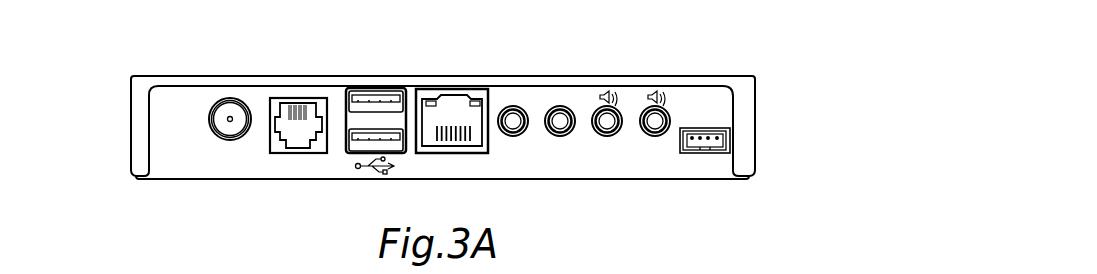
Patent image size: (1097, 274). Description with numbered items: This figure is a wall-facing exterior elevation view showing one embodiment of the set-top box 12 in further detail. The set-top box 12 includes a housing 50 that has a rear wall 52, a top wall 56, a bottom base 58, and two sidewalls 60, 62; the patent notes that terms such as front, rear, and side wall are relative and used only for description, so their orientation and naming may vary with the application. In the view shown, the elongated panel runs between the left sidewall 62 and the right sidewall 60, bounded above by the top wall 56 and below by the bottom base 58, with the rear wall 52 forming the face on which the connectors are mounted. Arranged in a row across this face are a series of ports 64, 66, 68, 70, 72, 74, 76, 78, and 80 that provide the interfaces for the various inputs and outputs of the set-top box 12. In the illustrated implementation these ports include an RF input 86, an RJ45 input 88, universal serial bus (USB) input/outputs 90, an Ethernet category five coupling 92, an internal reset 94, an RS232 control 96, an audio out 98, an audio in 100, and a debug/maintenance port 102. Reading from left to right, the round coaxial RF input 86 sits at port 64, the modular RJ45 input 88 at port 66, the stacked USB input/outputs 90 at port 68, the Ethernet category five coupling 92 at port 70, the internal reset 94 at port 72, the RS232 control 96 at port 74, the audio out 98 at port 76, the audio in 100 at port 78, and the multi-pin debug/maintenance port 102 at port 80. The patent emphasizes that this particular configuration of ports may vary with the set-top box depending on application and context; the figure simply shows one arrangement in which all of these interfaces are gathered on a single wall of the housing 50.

The set-top box 12 is at (133, 64).
The housing 50 is at (737, 70).
The rear wall 52 is at (168, 168).
The top wall 56 is at (199, 75).
The bottom base 58 is at (318, 182).
The sidewall 60 is at (753, 118).
The sidewall 62 is at (130, 93).
The port 64 is at (229, 100).
The port 66 is at (298, 100).
The port 68 is at (382, 94).
The port 70 is at (457, 94).
The port 72 is at (513, 106).
The port 74 is at (560, 106).
The port 76 is at (607, 106).
The port 78 is at (655, 106).
The port 80 is at (703, 153).
The RF input 86 is at (229, 140).
The RJ45 input 88 is at (278, 153).
The universal serial bus (USB) input/outputs 90 is at (367, 149).
The Ethernet category 5 (Cat 5) coupling 92 is at (455, 152).
The internal reset 94 is at (513, 137).
The RS232 control 96 is at (560, 137).
The audio out 98 is at (607, 137).
The audio in 100 is at (655, 137).
The debug/maintenance port 102 is at (728, 145).